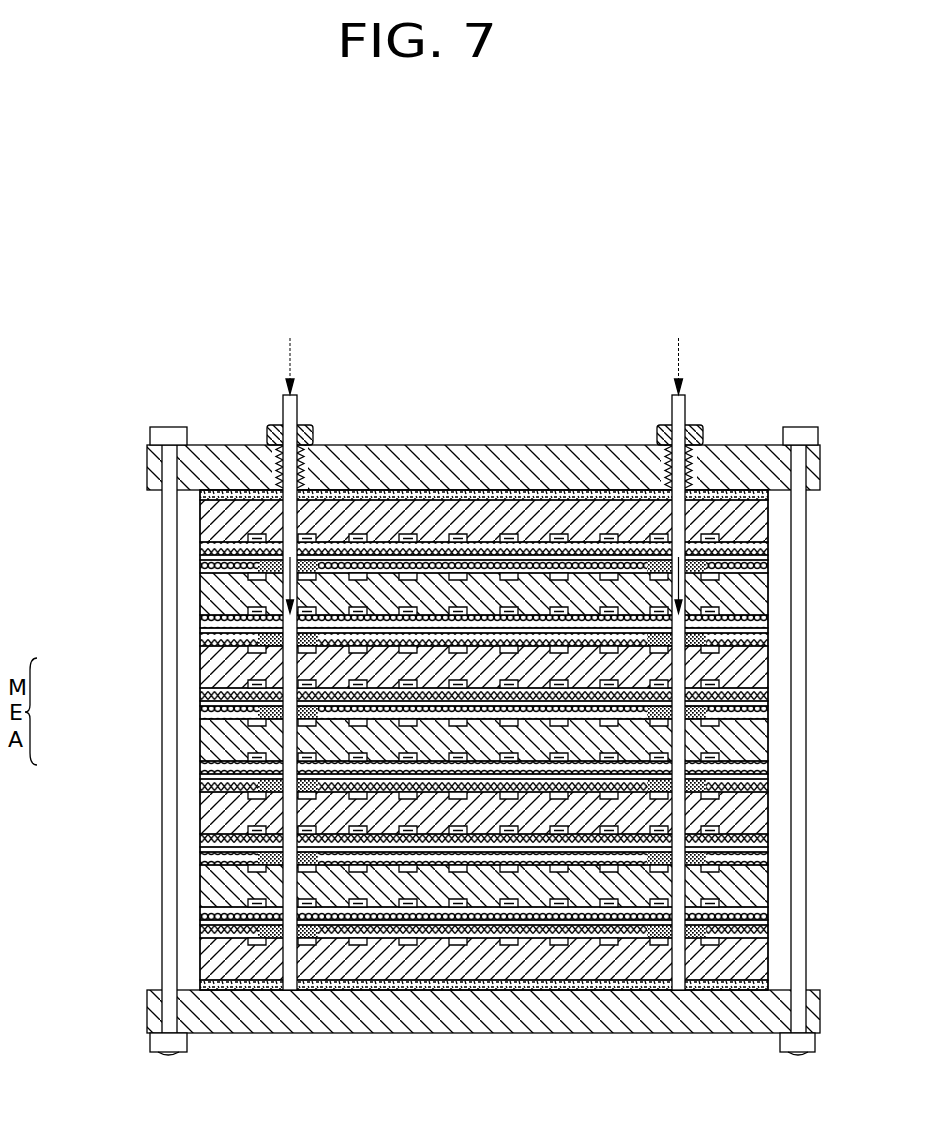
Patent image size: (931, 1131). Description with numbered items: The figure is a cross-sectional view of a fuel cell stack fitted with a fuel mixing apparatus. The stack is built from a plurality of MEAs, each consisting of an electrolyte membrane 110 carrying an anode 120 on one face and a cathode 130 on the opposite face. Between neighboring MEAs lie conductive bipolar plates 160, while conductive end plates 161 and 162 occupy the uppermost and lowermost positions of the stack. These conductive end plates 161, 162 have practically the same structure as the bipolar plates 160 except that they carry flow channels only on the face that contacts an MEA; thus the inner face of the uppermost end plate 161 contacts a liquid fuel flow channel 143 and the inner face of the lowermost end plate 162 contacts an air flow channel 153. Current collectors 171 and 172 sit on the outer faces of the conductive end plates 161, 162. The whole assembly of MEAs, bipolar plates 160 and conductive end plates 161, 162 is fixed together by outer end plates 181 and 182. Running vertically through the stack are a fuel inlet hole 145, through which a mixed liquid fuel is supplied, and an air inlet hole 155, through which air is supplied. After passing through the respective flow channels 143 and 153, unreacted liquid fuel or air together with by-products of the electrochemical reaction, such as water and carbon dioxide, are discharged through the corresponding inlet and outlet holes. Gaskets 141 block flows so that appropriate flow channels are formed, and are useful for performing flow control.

The electrolyte membrane 110 is at (200, 703).
The anode 120 is at (200, 692).
The cathode 130 is at (200, 715).
The gasket 141 is at (200, 860).
The liquid fuel flow channel 143 is at (758, 546).
The fuel inlet hole 145 is at (287, 415).
The air flow channel 153 is at (262, 580).
The air inlet hole 155 is at (680, 412).
The conductive bipolar plate 160 is at (770, 598).
The uppermost conductive end plate 161 is at (210, 519).
The lowermost conductive end plate 162 is at (213, 960).
The current collector 171 is at (770, 493).
The current collector 172 is at (767, 985).
The end plate 181 is at (510, 446).
The end plate 182 is at (493, 1035).